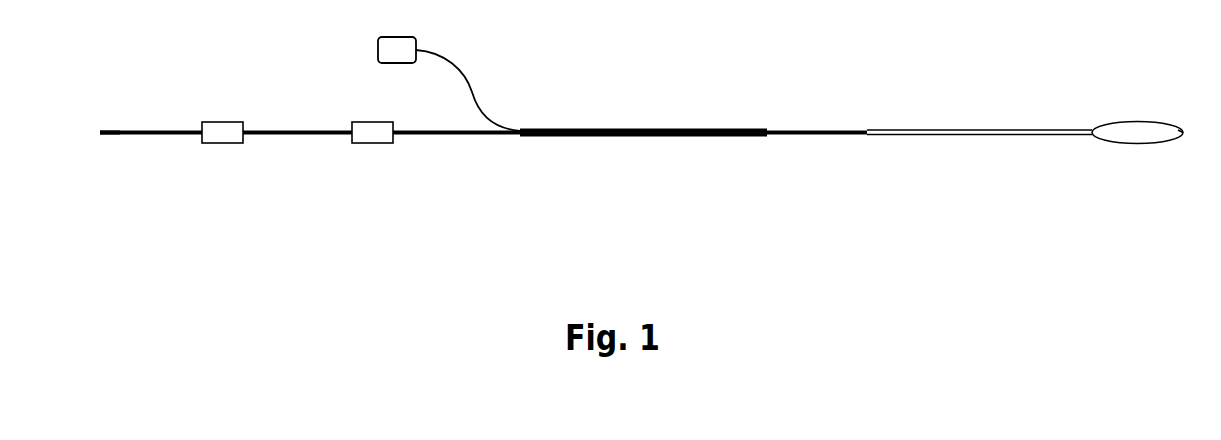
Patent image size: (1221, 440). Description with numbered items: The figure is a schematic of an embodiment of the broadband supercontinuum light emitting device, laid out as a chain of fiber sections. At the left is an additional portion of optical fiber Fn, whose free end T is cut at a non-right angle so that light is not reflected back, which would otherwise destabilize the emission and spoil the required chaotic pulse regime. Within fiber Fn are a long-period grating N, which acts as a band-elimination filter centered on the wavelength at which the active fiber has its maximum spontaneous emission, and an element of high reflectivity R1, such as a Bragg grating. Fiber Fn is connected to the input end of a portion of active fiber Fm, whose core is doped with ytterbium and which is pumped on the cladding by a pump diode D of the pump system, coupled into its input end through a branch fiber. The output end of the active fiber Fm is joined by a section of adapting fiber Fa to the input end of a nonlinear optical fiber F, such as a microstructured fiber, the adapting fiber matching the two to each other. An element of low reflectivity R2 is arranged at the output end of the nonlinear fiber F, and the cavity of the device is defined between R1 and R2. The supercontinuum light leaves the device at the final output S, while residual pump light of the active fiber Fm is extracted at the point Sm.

The free end T is at (100, 130).
The long-period grating N is at (222, 149).
The element of high reflectivity R1 is at (375, 149).
The pump diode D is at (430, 83).
The additional portion of optical fiber Fn is at (517, 164).
The portion of active fiber Fm is at (643, 113).
The extraction point of the residual pumping Sm is at (767, 131).
The section of adapting fiber Fa is at (817, 153).
The nonlinear optical fiber F is at (979, 117).
The element of low reflectivity R2 is at (1137, 153).
The final output S is at (1189, 135).